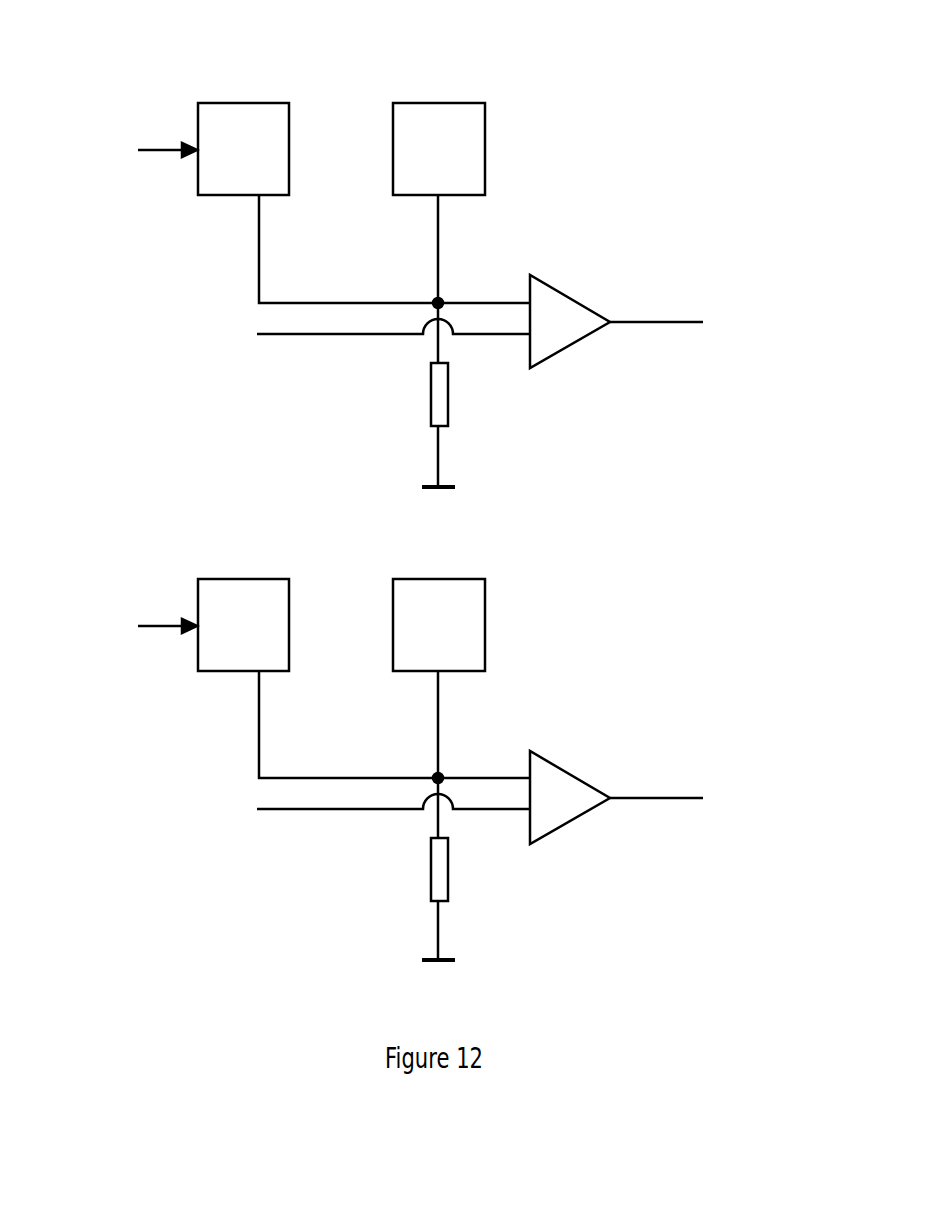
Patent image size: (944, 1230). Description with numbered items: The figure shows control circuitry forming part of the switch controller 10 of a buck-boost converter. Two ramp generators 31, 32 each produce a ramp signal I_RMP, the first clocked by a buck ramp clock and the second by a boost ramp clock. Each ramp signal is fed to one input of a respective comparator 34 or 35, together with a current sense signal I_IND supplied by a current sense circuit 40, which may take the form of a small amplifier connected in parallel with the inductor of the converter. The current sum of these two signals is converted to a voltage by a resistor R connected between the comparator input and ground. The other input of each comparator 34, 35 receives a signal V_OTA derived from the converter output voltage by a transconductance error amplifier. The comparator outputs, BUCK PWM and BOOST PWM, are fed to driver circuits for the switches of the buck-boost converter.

The switch controller 10 is at (140, 42).
The ramp generator 31 is at (243, 103).
The ramp generator 32 is at (243, 579).
The comparator 34 is at (562, 288).
The comparator 35 is at (560, 765).
The current sense circuit 40 is at (438, 103).